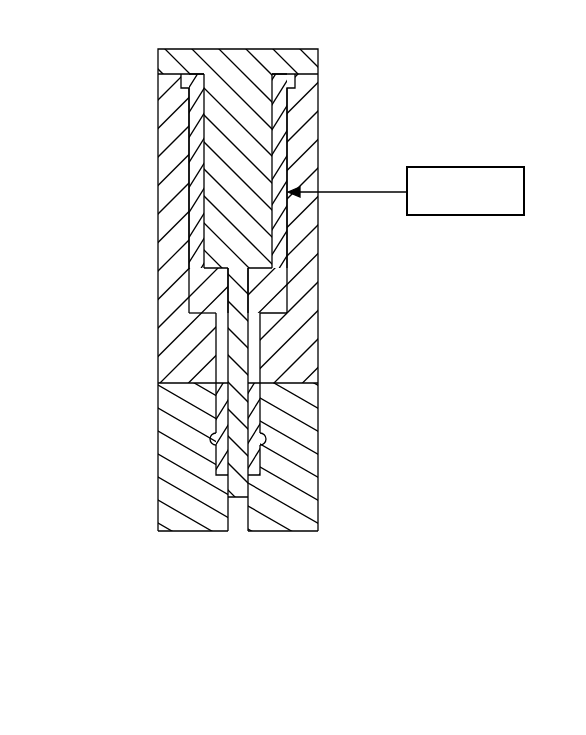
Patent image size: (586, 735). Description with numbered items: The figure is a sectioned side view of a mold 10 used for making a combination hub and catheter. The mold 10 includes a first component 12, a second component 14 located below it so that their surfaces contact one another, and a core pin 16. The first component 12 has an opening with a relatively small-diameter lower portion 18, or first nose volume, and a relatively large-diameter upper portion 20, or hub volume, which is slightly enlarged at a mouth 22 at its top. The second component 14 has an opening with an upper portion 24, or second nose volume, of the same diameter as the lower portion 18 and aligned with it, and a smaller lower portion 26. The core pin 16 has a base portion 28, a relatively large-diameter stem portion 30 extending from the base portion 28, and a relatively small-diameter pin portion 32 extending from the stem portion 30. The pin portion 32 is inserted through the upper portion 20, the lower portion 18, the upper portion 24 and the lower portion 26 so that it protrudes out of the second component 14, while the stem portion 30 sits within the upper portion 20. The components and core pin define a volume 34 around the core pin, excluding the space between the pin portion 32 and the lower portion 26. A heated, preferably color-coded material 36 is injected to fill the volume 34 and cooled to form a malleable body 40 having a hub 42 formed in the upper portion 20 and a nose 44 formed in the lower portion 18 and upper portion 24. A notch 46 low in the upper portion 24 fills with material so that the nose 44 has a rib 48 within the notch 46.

The mold 10 is at (90, 86).
The first component 12 is at (318, 303).
The second component 14 is at (318, 472).
The core pin 16 is at (257, 230).
The lower portion (first nose volume) 18 is at (262, 357).
The upper portion (hub volume) 20 is at (293, 367).
The mouth 22 is at (298, 92).
The upper portion (second nose volume) 24 is at (240, 418).
The lower portion 26 is at (252, 515).
The base portion 28 is at (307, 60).
The stem portion 30 is at (257, 160).
The pin portion 32 is at (267, 300).
The volume 34 is at (278, 262).
The material 36 is at (480, 167).
The malleable body 40 is at (208, 287).
The hub 42 is at (198, 172).
The nose 44 is at (205, 350).
The notch 46 is at (263, 445).
The rib 48 is at (205, 441).